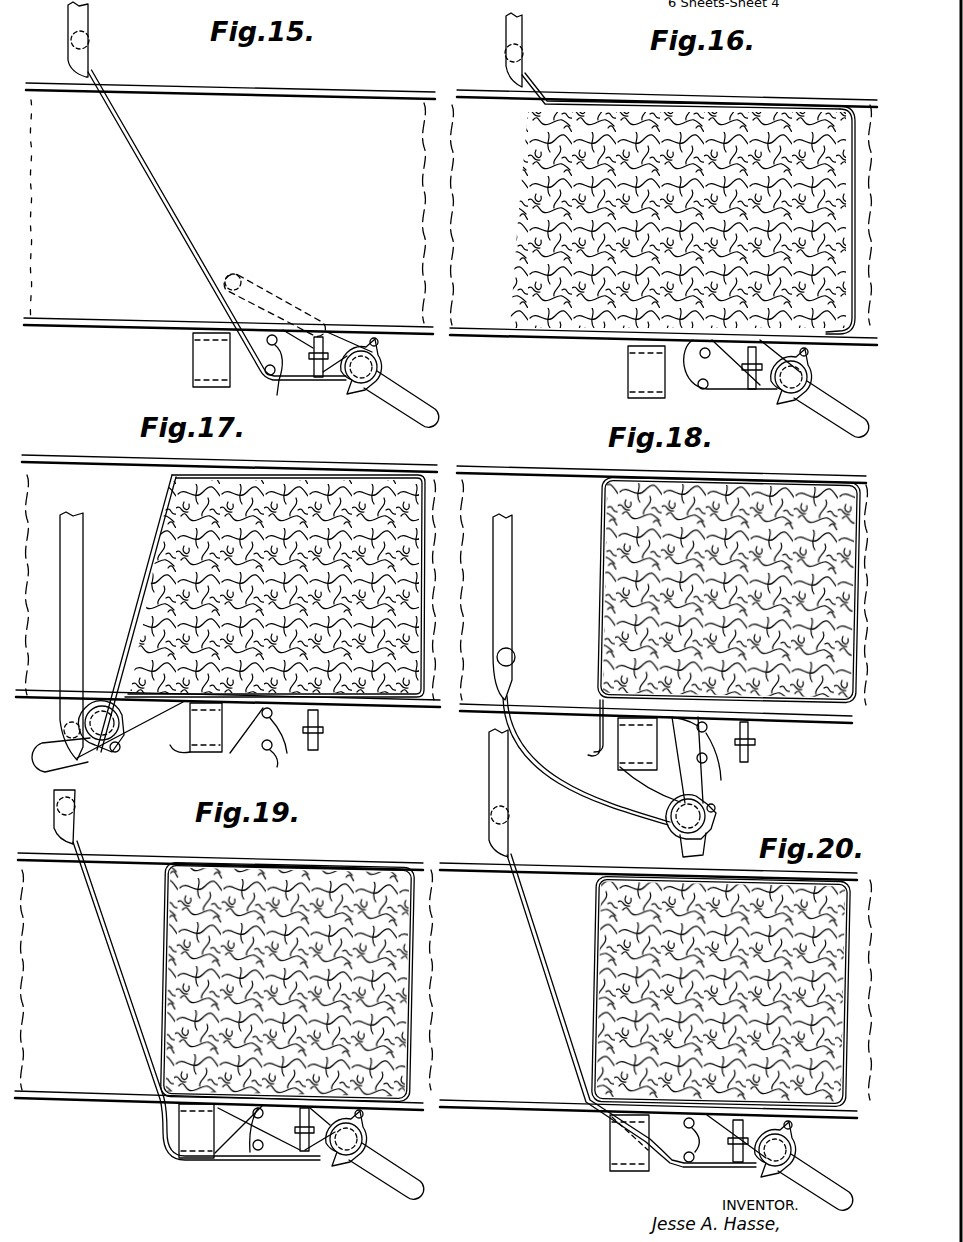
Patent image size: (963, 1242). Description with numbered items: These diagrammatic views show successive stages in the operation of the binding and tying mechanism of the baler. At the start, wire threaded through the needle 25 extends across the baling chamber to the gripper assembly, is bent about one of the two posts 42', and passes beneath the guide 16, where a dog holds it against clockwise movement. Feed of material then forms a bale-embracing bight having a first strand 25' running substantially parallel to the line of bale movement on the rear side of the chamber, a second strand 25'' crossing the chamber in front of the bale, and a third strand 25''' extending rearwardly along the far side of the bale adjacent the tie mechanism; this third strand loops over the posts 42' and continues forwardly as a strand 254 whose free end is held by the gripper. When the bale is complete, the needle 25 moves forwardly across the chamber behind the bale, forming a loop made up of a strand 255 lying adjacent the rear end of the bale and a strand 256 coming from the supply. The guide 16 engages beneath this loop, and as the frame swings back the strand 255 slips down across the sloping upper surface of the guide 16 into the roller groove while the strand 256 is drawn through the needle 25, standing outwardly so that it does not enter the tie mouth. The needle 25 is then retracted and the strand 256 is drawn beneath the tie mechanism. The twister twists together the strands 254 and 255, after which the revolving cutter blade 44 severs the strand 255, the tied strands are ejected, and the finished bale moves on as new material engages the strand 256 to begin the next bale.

In FIG. 15, the needle 25 is at (105, 39).
In FIG. 16, the needle 25 is at (542, 50).
In FIG. 17, the needle 25 is at (89, 636).
In FIG. 18, the needle 25 is at (521, 607).
In FIG. 19, the needle 25 is at (92, 817).
In FIG. 20, the needle 25 is at (525, 793).
In FIG. 16, the first wire strand 25' is at (681, 92).
In FIG. 18, the first wire strand 25' is at (709, 657).
In FIG. 19, the first wire strand 25' is at (316, 855).
In FIG. 20, the first wire strand 25' is at (619, 863).
In FIG. 16, the second wire strand 25'' is at (824, 206).
In FIG. 17, the second wire strand 25'' is at (297, 567).
In FIG. 18, the second wire strand 25'' is at (814, 473).
In FIG. 19, the second wire strand 25'' is at (385, 857).
In FIG. 20, the second wire strand 25'' is at (763, 879).
In FIG. 16, the third wire strand 25''' is at (688, 243).
In FIG. 17, the third wire strand 25''' is at (274, 615).
In FIG. 18, the third wire strand 25''' is at (729, 621).
In FIG. 19, the third wire strand 25''' is at (311, 1012).
In FIG. 20, the third wire strand 25''' is at (723, 1013).
In FIG. 15, the gripped wire strand 254 is at (328, 383).
In FIG. 16, the gripped wire strand 254 is at (768, 390).
In FIG. 19, the gripped wire strand 254 is at (302, 1157).
In FIG. 20, the gripped wire strand 254 is at (714, 1167).
In FIG. 17, the needle-loop strand adjacent bale 255 is at (151, 557).
In FIG. 18, the needle-loop strand adjacent bale 255 is at (600, 560).
In FIG. 19, the needle-loop strand adjacent bale 255 is at (163, 921).
In FIG. 20, the needle-loop strand adjacent bale 255 is at (594, 923).
In FIG. 15, the supply-side strand 256 is at (190, 261).
In FIG. 18, the supply-side strand 256 is at (575, 740).
In FIG. 19, the supply-side strand 256 is at (130, 1022).
In FIG. 20, the supply-side strand 256 is at (564, 1030).
In FIG. 15, the posts 42' is at (280, 379).
In FIG. 16, the posts 42' is at (730, 382).
In FIG. 17, the posts 42' is at (279, 746).
In FIG. 18, the posts 42' is at (703, 759).
In FIG. 19, the posts 42' is at (257, 1158).
In FIG. 20, the posts 42' is at (668, 1161).
In FIG. 15, the revolving cutter blade 44 is at (327, 331).
In FIG. 16, the revolving cutter blade 44 is at (750, 383).
In FIG. 17, the revolving cutter blade 44 is at (320, 748).
In FIG. 18, the revolving cutter blade 44 is at (748, 740).
In FIG. 19, the revolving cutter blade 44 is at (304, 1154).
In FIG. 20, the revolving cutter blade 44 is at (740, 1165).
In FIG. 15, the guide 16 is at (385, 362).
In FIG. 16, the guide 16 is at (817, 376).
In FIG. 17, the guide 16 is at (123, 738).
In FIG. 18, the guide 16 is at (711, 829).
In FIG. 19, the guide 16 is at (363, 1133).
In FIG. 20, the guide 16 is at (795, 1151).